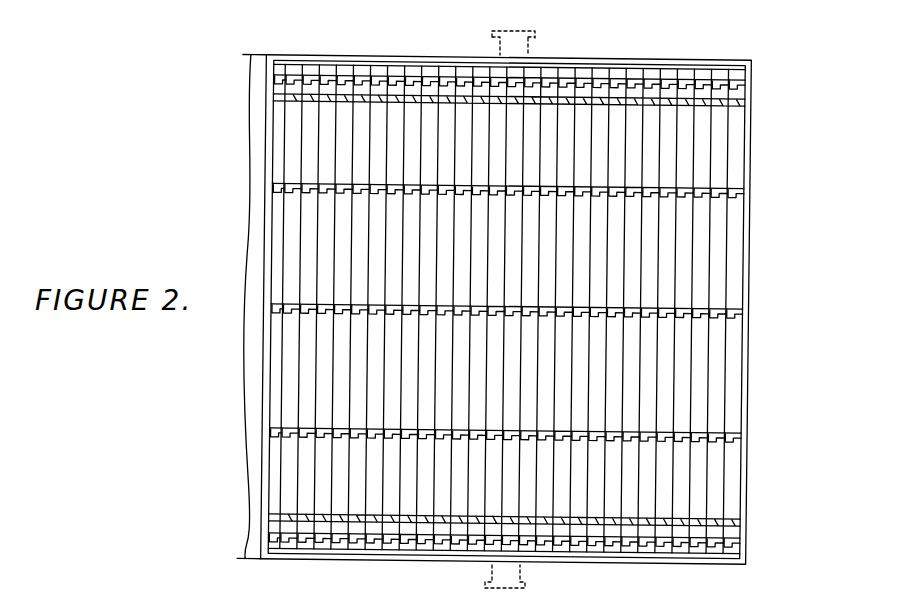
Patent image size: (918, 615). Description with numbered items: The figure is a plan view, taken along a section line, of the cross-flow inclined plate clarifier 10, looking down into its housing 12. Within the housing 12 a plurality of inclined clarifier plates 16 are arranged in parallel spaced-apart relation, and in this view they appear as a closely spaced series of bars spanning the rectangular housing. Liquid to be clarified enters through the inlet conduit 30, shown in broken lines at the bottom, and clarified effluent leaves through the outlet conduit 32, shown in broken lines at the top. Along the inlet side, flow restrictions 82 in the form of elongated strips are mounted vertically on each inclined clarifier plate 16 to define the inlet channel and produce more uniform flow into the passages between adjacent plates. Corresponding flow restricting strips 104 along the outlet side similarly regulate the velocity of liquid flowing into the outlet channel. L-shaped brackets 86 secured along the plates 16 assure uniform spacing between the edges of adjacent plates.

The cross-flow inclined plate clarifier 10 is at (677, 22).
The housing 12 is at (585, 57).
The inclined clarifier plates 16 is at (292, 142).
The inlet conduit 30 is at (525, 580).
The outlet conduit 32 is at (492, 35).
The flow restrictions 82 is at (338, 517).
The L-shaped brackets 86 is at (408, 88).
The flow restricting strips 104 is at (343, 97).